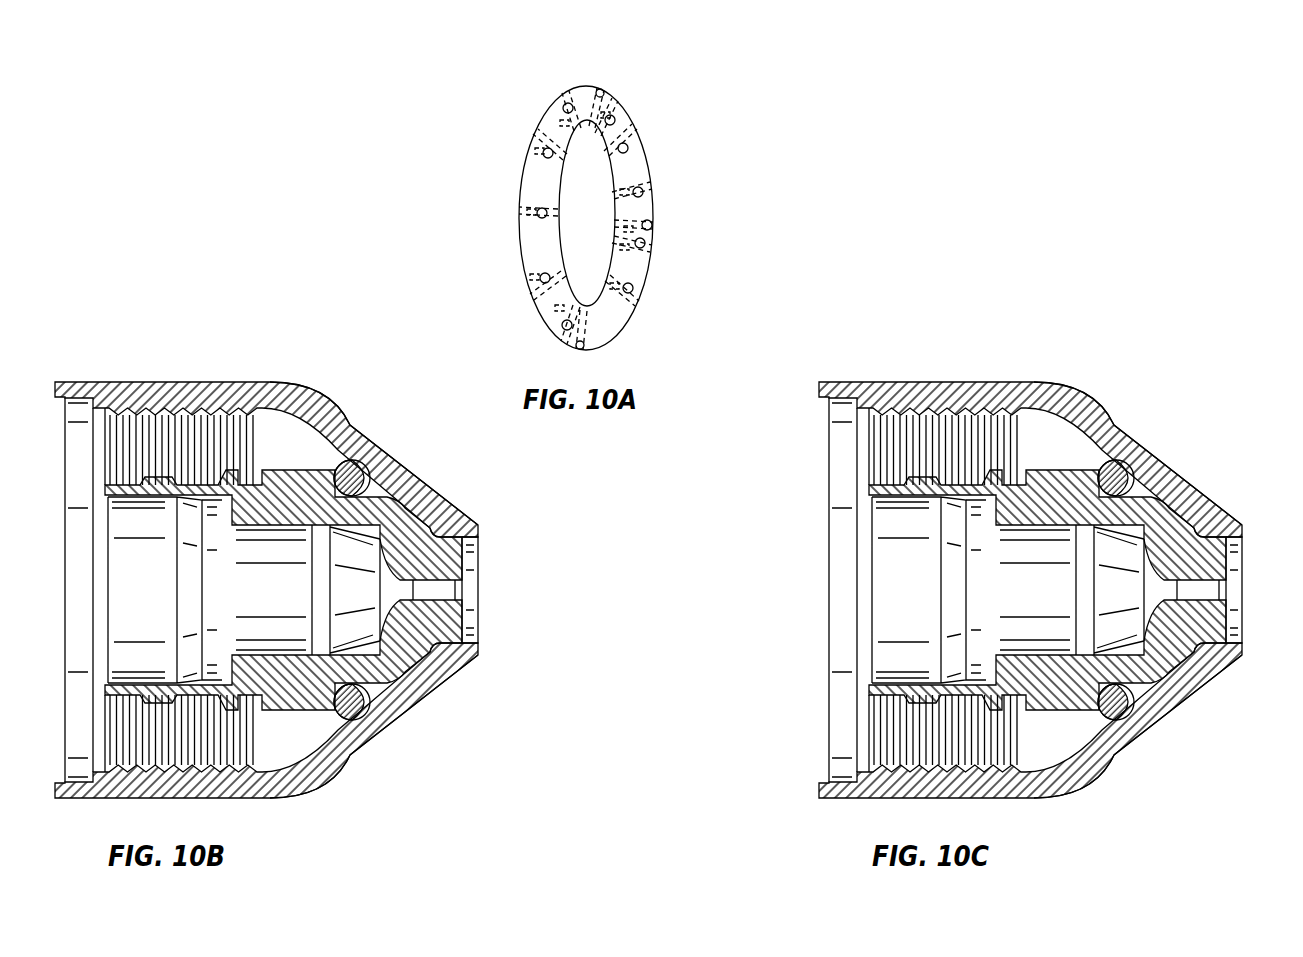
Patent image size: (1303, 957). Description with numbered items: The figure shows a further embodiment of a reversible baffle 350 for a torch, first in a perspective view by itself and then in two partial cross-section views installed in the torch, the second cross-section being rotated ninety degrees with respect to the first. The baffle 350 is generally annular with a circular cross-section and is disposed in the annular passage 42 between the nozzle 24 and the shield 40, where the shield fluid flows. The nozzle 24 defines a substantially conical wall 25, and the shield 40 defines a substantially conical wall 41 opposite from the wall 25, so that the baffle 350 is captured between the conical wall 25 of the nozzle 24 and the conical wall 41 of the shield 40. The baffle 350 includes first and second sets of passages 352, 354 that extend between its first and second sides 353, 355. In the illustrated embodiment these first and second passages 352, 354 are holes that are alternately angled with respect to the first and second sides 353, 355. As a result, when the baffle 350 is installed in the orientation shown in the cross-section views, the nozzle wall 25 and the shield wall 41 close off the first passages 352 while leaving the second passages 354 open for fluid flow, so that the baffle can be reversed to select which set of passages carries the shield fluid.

In FIG. 10B, the nozzle 24 is at (470, 567).
In FIG. 10C, the nozzle 24 is at (1264, 590).
In FIG. 10B, the conical wall 25 is at (343, 458).
In FIG. 10B, the shield 40 is at (318, 780).
In FIG. 10C, the shield 40 is at (1030, 600).
In FIG. 10B, the conical wall 41 is at (400, 505).
In FIG. 10C, the conical wall 41 is at (1138, 590).
In FIG. 10B, the annular passage 42 is at (273, 432).
In FIG. 10C, the annular passage 42 is at (955, 524).
In FIG. 10A, the reversible baffle 350 is at (586, 190).
In FIG. 10B, the reversible baffle 350 is at (323, 675).
In FIG. 10C, the reversible baffle 350 is at (1047, 590).
In FIG. 10A, the first passages 352 is at (645, 243).
In FIG. 10C, the first passages 352 is at (1152, 551).
In FIG. 10A, the first side 353 is at (646, 172).
In FIG. 10A, the second passages 354 is at (522, 183).
In FIG. 10B, the second passages 354 is at (352, 460).
In FIG. 10A, the second side 355 is at (510, 222).